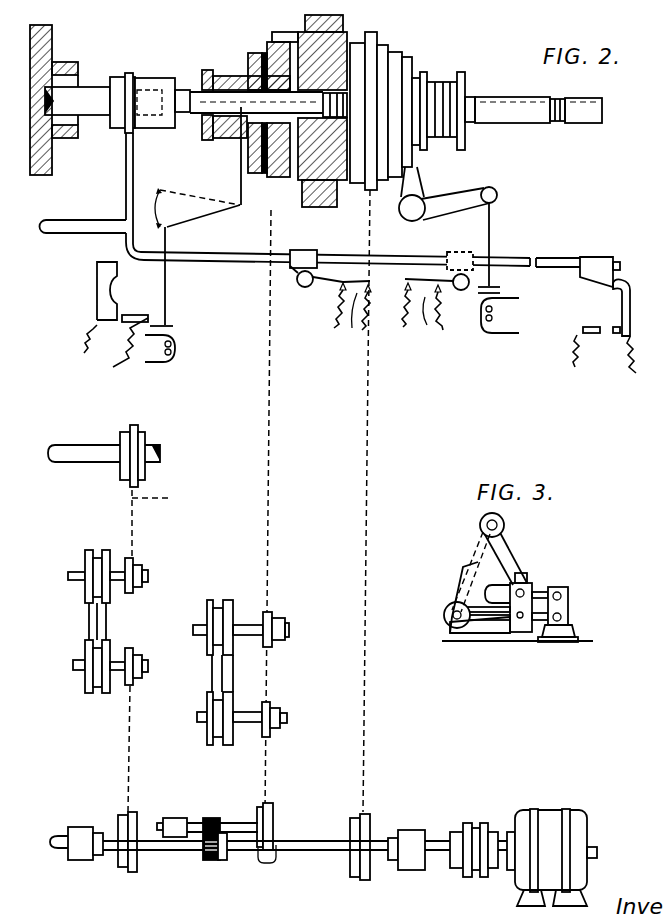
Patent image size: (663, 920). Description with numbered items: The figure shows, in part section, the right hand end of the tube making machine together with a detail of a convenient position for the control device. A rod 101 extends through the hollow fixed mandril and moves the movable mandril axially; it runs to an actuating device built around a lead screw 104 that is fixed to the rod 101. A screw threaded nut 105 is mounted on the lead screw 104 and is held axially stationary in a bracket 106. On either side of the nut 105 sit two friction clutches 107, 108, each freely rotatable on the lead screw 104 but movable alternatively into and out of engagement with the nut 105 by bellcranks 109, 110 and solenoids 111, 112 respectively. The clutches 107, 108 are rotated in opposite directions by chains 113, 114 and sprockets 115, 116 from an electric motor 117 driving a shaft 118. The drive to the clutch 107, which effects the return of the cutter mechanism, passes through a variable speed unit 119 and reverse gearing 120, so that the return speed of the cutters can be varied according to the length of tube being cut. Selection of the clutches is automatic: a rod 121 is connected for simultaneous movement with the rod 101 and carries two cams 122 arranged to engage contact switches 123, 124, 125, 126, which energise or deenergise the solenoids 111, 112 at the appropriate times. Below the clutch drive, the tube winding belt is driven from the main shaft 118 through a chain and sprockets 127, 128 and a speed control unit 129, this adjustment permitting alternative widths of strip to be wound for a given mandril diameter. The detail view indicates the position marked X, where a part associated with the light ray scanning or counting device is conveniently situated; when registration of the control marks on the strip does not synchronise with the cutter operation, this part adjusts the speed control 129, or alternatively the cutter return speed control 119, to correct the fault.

In FIG. 2, the rod 101 is at (97, 93).
In FIG. 2, the lead screw 104 is at (507, 103).
In FIG. 2, the screw threaded nut 105 is at (334, 50).
In FIG. 2, the bracket 106 is at (310, 20).
In FIG. 2, the friction clutch 107 is at (270, 174).
In FIG. 2, the friction clutch 108 is at (378, 163).
In FIG. 2, the bellcrank 109 is at (205, 219).
In FIG. 2, the bellcrank 110 is at (497, 195).
In FIG. 2, the solenoid 111 is at (179, 348).
In FIG. 2, the solenoid 112 is at (492, 313).
In FIG. 2, the chain 113 is at (268, 463).
In FIG. 2, the chain 114 is at (367, 463).
In FIG. 2, the sprocket 115 is at (273, 187).
In FIG. 2, the sprocket 116 is at (370, 190).
In FIG. 2, the electric motor 117 is at (575, 825).
In FIG. 2, the shaft 118 is at (435, 845).
In FIG. 2, the variable speed unit 119 is at (272, 645).
In FIG. 2, the reverse gearing 120 is at (210, 862).
In FIG. 2, the rod 121 is at (517, 259).
In FIG. 2, the cam 122 is at (290, 268).
In FIG. 2, the contact switch 123 is at (110, 300).
In FIG. 2, the contact switch 124 is at (347, 312).
In FIG. 2, the contact switch 125 is at (422, 314).
In FIG. 2, the contact switch 126 is at (600, 327).
In FIG. 2, the chain and sprocket 127 is at (133, 557).
In FIG. 2, the chain and sprocket 128 is at (130, 690).
In FIG. 2, the speed control unit 129 is at (110, 617).
In FIG. 3, the position marked x X is at (525, 568).